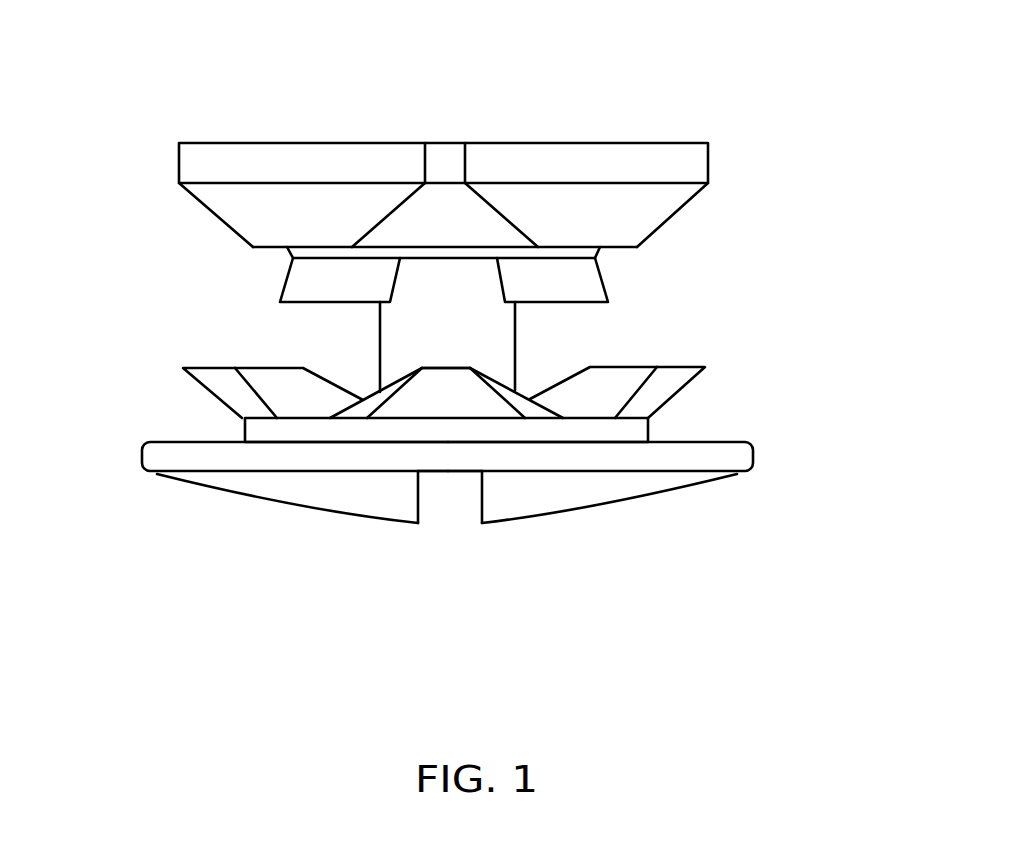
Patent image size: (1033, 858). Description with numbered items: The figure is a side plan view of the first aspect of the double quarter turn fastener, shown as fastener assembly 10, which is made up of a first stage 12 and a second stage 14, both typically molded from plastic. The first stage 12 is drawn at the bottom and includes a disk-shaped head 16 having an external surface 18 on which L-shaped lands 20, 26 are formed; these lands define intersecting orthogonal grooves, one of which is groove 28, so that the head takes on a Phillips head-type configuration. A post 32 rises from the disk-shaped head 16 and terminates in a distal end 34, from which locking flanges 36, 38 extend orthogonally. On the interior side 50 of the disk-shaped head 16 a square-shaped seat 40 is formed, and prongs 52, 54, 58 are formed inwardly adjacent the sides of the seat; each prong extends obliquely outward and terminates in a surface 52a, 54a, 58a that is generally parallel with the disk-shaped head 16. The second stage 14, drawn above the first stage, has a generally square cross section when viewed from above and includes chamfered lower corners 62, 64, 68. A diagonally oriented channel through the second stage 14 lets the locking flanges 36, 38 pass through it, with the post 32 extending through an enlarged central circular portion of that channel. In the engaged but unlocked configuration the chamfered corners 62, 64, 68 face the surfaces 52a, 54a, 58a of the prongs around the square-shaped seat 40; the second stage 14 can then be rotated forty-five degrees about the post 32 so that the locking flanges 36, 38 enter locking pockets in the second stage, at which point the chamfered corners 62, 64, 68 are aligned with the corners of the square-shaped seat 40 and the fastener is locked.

The fastener assembly 10 is at (812, 99).
The first stage 12 is at (780, 428).
The second stage 14 is at (723, 150).
The disk-shaped head 16 is at (753, 450).
The external surface 18 is at (500, 470).
The L-shaped land 20 is at (333, 518).
The L-shaped land 26 is at (633, 495).
The groove 28 is at (450, 502).
The post 32 is at (517, 322).
The distal end 34 is at (465, 255).
The locking flange 36 is at (290, 278).
The locking flange 38 is at (605, 283).
The square-shaped seat 40 is at (650, 427).
The interior side 50 is at (177, 440).
The prong 52 is at (422, 388).
The surface 52a is at (450, 365).
The prong 54 is at (708, 367).
The surface 54a is at (687, 367).
The prong 58 is at (193, 378).
The surface 58a is at (212, 368).
The chamfered lower corner 62 is at (420, 210).
The chamfered lower corner 64 is at (685, 207).
The chamfered lower corner 68 is at (210, 207).